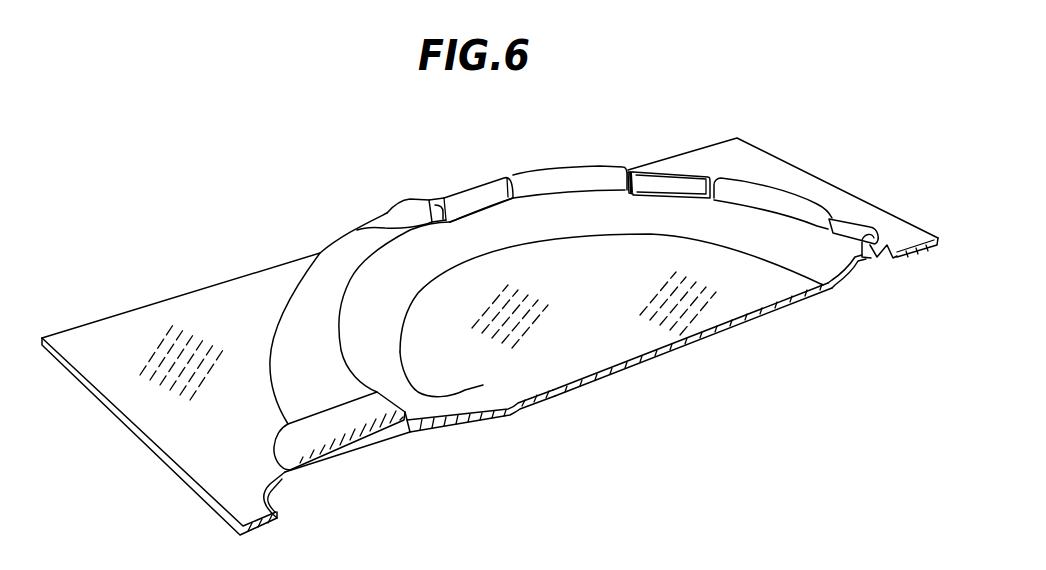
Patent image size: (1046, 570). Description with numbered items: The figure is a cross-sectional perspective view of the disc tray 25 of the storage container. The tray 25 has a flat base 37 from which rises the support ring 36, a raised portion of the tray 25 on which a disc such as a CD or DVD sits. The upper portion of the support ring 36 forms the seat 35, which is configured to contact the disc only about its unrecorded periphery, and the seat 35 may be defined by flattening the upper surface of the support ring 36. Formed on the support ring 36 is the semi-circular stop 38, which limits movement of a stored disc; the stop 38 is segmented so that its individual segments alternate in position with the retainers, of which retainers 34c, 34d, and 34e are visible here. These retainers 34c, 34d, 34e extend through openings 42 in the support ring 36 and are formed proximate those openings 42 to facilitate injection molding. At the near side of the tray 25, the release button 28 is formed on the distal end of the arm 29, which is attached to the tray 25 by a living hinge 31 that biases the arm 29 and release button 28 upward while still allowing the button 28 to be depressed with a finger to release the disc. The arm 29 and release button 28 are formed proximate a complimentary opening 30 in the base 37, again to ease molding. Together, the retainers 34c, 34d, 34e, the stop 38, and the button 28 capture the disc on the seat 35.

The tray 25 is at (657, 83).
The release button 28 is at (283, 443).
The arm 29 is at (440, 408).
The complimentary opening 30 is at (274, 480).
The living hinge 31 is at (500, 402).
The retainer 34c is at (845, 219).
The retainer 34d is at (667, 173).
The retainer 34e is at (480, 182).
The seat 35 is at (320, 253).
The support ring 36 is at (683, 223).
The base 37 is at (103, 358).
The semi-circular stop 38 is at (560, 167).
The openings 42 is at (453, 193).